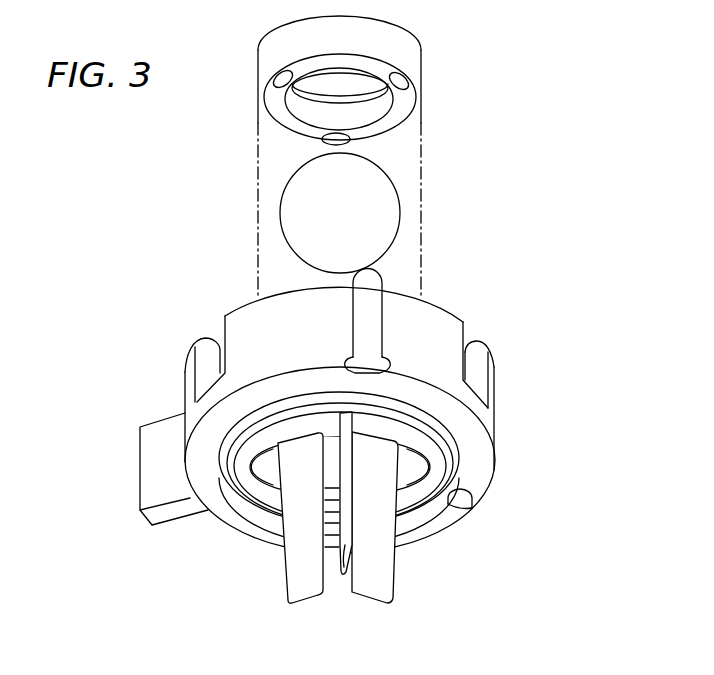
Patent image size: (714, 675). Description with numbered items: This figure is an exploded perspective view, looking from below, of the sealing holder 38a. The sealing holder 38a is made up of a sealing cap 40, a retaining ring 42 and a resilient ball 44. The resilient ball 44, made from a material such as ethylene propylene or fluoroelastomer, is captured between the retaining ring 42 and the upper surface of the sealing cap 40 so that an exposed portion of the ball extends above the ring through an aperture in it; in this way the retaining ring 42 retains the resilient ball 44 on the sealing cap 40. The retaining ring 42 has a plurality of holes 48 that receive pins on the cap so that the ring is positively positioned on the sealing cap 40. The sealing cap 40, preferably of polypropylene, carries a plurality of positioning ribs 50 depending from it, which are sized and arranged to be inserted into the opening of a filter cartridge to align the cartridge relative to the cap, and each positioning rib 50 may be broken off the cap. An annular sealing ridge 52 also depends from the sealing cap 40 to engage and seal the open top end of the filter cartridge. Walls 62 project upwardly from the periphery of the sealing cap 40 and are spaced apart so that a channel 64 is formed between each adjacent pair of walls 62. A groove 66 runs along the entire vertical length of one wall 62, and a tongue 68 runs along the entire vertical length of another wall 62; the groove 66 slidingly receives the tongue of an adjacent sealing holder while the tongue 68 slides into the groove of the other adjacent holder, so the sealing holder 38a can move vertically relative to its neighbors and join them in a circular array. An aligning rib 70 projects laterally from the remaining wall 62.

The sealing holder 38a is at (575, 17).
The sealing cap 40 is at (318, 458).
The retaining ring 42 is at (408, 20).
The resilient ball 44 is at (400, 212).
The holes 48 is at (284, 82).
The positioning ribs 50 is at (342, 573).
The annular sealing ridge 52 is at (462, 455).
The walls 62 is at (440, 307).
The channel 64 is at (213, 333).
The groove 66 is at (458, 504).
The tongue 68 is at (368, 328).
The aligning rib 70 is at (153, 468).